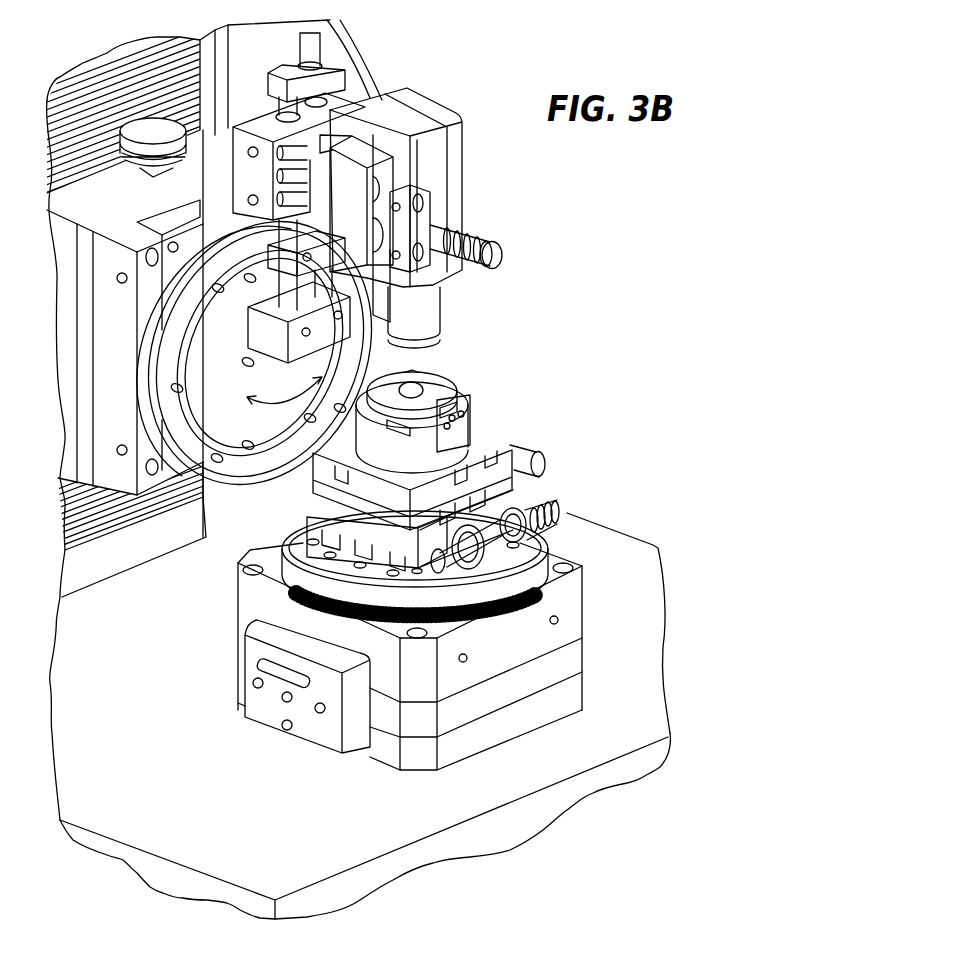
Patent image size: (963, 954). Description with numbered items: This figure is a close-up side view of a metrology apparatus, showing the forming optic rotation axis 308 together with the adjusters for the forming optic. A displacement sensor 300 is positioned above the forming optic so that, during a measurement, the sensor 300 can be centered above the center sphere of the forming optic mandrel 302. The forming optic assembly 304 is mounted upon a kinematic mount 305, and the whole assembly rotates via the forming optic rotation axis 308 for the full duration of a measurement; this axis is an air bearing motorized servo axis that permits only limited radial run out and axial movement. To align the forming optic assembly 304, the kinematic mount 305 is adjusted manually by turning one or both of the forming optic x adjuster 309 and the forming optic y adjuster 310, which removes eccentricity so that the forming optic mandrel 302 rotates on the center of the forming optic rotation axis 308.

The displacement sensor 300 is at (453, 183).
The forming optic mandrel 302 is at (417, 392).
The forming optic assembly 304 is at (453, 391).
The kinematic mount 305 is at (473, 432).
The forming optic rotation axis 308 is at (550, 637).
The forming optic x adjuster 309 is at (527, 513).
The forming optic y adjuster 310 is at (530, 452).